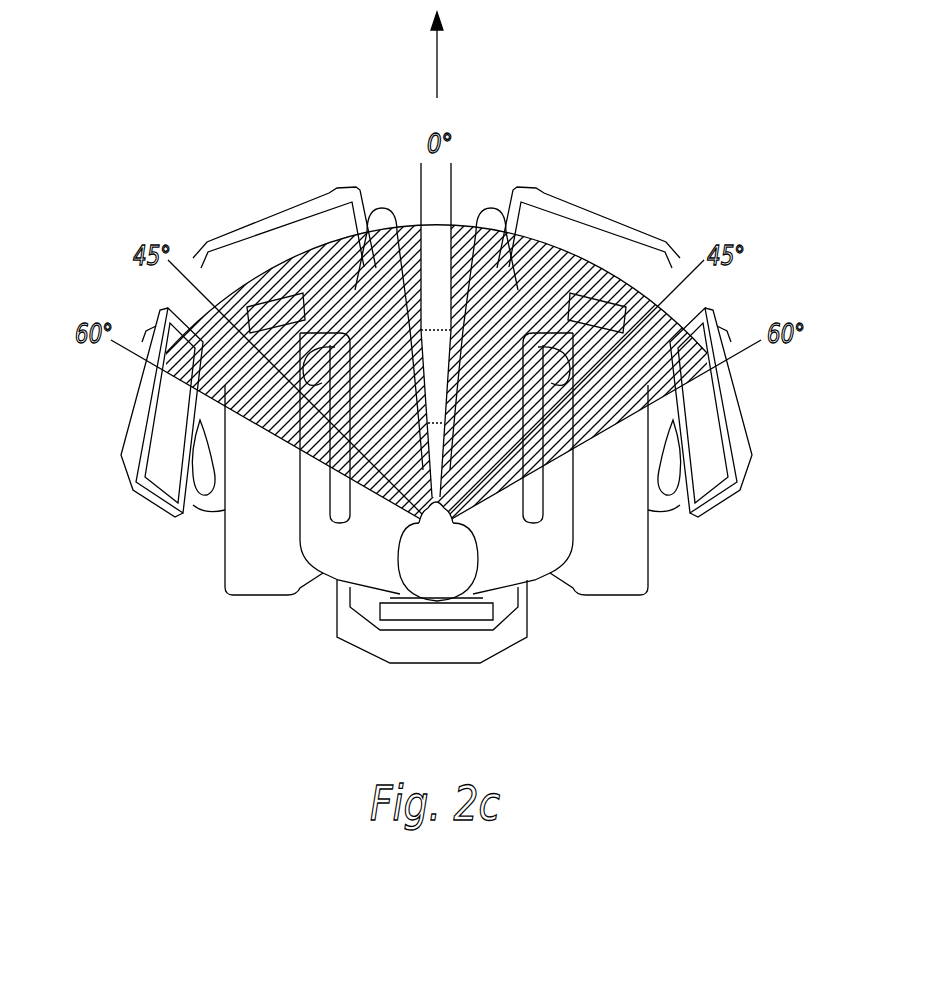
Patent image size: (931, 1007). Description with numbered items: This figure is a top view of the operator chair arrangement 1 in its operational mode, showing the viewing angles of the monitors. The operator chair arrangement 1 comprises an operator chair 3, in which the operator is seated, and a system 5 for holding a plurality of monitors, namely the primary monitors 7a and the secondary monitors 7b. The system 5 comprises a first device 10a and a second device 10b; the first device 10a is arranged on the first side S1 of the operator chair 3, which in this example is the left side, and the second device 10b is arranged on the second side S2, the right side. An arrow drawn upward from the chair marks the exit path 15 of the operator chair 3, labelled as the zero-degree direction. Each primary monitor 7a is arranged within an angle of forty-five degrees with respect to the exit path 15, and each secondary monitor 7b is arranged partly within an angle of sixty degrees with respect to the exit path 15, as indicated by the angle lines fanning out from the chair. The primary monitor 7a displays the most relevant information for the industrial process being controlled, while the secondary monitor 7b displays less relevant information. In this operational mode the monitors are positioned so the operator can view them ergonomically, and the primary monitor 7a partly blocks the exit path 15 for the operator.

The operator chair arrangement 1 is at (120, 198).
The operator chair 3 is at (437, 645).
The system for holding a plurality of monitors 5 is at (323, 677).
The primary monitor 7a is at (281, 247).
The secondary monitor 7b is at (162, 428).
The first device 10a is at (190, 567).
The second device 10b is at (683, 567).
The exit path 15 is at (437, 52).
The first side S1 is at (137, 554).
The second side S2 is at (736, 554).